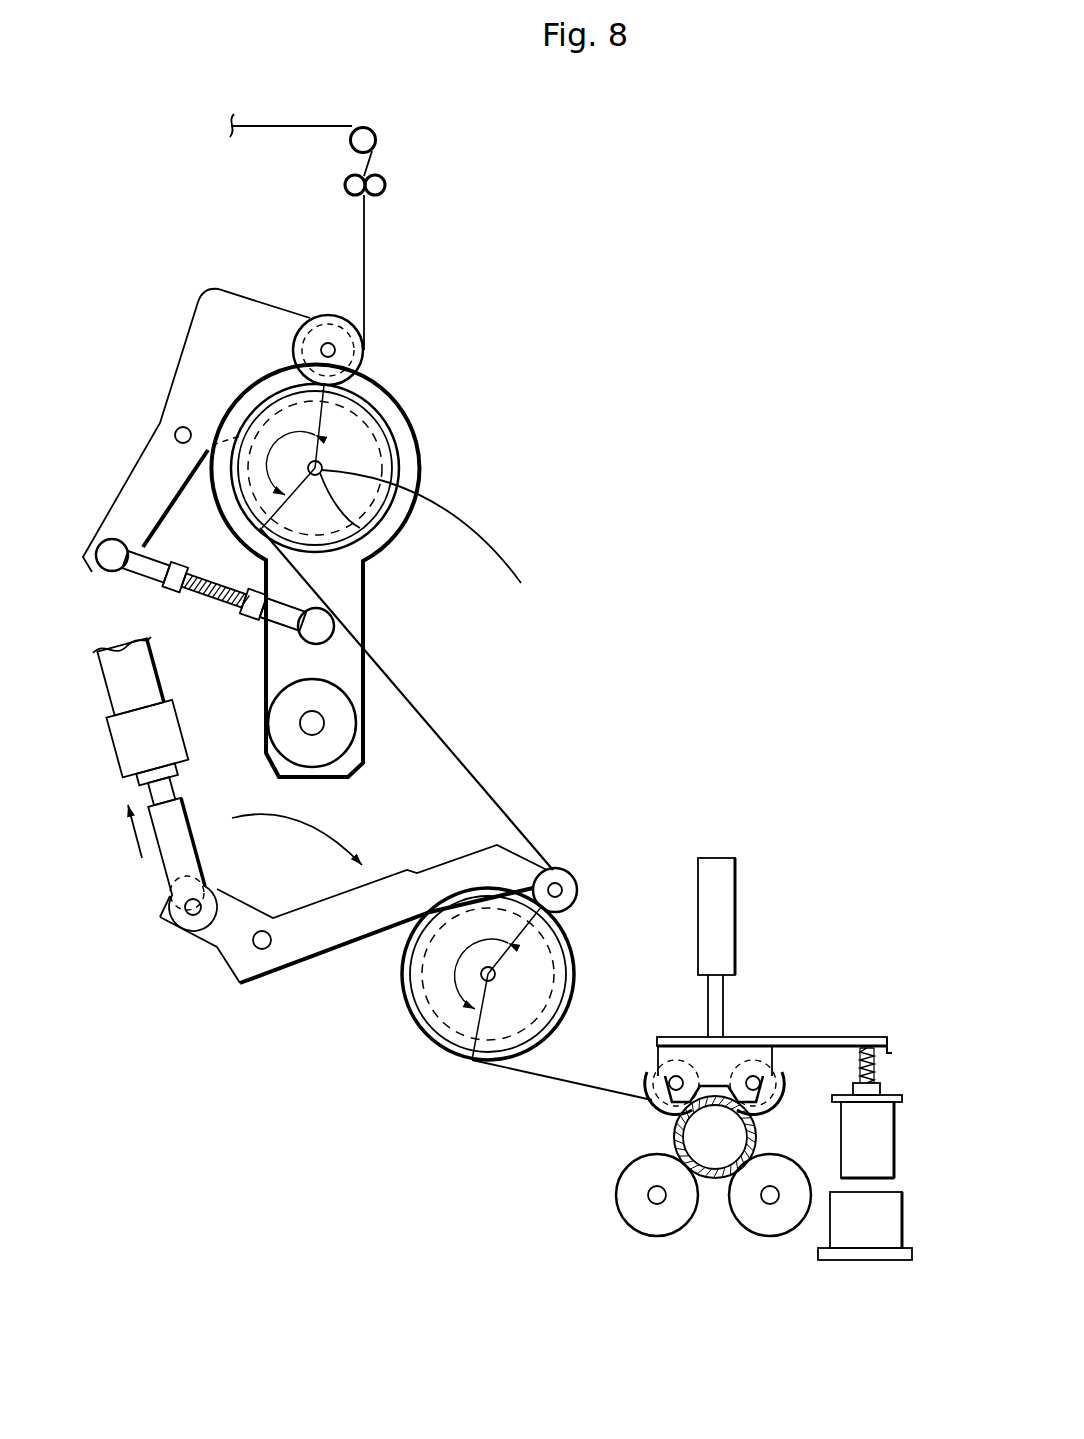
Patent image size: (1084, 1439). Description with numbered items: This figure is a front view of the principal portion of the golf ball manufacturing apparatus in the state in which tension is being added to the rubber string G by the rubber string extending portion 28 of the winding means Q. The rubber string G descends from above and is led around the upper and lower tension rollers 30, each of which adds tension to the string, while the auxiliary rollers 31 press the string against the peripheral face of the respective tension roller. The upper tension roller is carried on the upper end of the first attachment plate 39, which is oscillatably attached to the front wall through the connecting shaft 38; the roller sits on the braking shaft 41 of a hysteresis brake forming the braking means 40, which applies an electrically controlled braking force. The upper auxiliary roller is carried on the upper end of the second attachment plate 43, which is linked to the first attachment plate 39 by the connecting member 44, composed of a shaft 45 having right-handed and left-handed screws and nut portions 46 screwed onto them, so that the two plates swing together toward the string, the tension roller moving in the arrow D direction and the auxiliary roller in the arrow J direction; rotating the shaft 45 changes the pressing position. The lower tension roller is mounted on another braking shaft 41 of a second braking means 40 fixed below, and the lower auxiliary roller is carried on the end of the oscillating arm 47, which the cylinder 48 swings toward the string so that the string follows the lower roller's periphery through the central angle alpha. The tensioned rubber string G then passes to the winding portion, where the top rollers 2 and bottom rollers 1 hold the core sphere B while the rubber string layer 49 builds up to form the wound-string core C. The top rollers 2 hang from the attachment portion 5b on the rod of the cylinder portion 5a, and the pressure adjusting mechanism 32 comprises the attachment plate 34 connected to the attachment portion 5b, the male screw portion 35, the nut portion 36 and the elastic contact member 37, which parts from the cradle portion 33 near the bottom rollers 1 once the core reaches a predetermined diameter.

The bottom rollers 1 is at (648, 1238).
The top rollers 2 is at (650, 1070).
The cylinder portion 5a is at (740, 883).
The attachment portion 5b is at (727, 1053).
The rubber string extending portion 28 is at (590, 563).
The tension rollers 30 is at (393, 423).
The auxiliary rollers 31 is at (333, 315).
The pressure adjusting mechanism 32 is at (872, 1008).
The cradle portion 33 is at (888, 1220).
The attachment plate 34 is at (813, 1050).
The male screw portion 35 is at (880, 1055).
The nut portion 36 is at (882, 1085).
The contact member 37 is at (882, 1147).
The connecting shaft 38 is at (320, 733).
The first attachment plate 39 is at (355, 594).
The braking means 40 is at (400, 446).
The braking shaft 41 is at (372, 538).
The second attachment plate 43 is at (200, 342).
The connecting member 44 is at (215, 606).
The shaft 45 is at (200, 600).
The nut portions 46 is at (185, 568).
The oscillating arm 47 is at (318, 933).
The cylinder 48 is at (105, 693).
The rubber string layer 49 is at (717, 1180).
The core sphere B is at (724, 1151).
The wound-string core C is at (660, 1128).
The arrow D direction D is at (421, 526).
The rubber string G is at (455, 743).
The arrow J direction J is at (323, 339).
The winding means Q is at (621, 219).